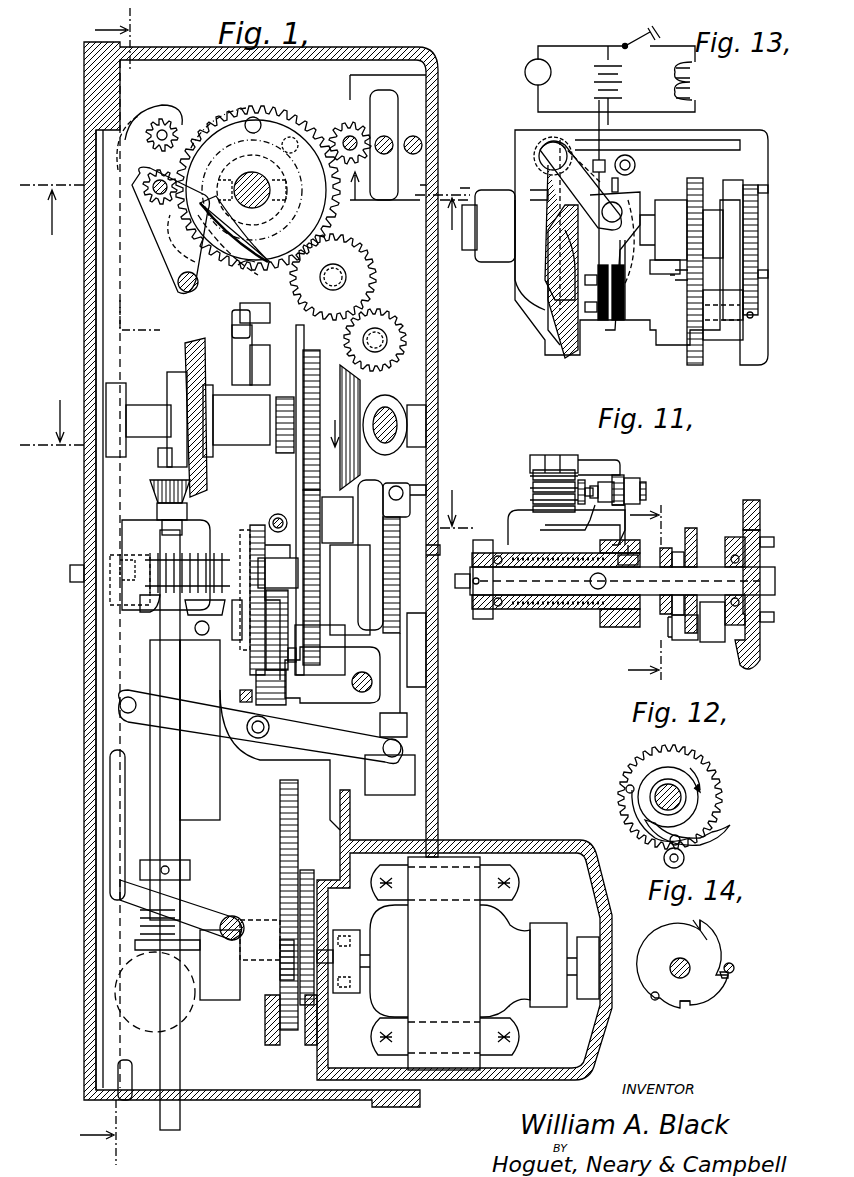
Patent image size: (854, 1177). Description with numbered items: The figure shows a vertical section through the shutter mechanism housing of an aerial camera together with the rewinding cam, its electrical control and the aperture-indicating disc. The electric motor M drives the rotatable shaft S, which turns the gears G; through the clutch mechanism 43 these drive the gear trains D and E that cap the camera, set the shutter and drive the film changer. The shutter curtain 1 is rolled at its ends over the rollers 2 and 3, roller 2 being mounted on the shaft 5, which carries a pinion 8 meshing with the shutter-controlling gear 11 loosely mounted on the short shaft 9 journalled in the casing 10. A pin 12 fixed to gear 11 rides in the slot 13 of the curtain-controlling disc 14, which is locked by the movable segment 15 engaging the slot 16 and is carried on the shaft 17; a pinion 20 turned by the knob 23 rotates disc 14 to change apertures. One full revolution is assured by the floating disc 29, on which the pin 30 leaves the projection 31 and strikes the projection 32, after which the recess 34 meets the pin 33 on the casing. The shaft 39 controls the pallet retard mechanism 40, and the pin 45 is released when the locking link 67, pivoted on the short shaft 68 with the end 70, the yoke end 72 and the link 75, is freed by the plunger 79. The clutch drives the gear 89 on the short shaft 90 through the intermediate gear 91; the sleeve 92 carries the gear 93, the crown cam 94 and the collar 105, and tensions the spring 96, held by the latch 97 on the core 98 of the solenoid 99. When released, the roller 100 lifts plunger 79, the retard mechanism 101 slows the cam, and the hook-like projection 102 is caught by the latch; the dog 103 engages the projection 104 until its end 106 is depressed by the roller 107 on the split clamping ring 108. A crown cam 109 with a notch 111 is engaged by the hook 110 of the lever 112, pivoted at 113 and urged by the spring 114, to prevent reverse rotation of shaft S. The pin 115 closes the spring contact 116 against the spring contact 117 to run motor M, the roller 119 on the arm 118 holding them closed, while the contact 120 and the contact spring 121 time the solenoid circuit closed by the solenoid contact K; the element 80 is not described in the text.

In FIG. 1, the shutter curtain 1 is at (118, 300).
In FIG. 1, the roller 2 is at (97, 586).
In FIG. 1, the roller 3 is at (155, 1008).
In FIG. 1, the shaft 5 is at (208, 100).
In FIG. 1, the pinion 8 is at (163, 118).
In FIG. 1, the short shaft 9 is at (258, 165).
In FIG. 11, the casing 10 is at (518, 512).
In FIG. 1, the shutter-controlling gear 11 is at (220, 105).
In FIG. 1, the pin 12 is at (238, 98).
In FIG. 11, the pin 12 is at (646, 587).
In FIG. 1, the slot 13 is at (236, 163).
In FIG. 1, the curtain-controlling disc 14 is at (258, 122).
In FIG. 1, the movable segment 15 is at (245, 268).
In FIG. 1, the slot 16 is at (268, 312).
In FIG. 1, the shaft 17 is at (182, 292).
In FIG. 1, the pinion 20 is at (175, 205).
In FIG. 1, the knob 23 is at (94, 255).
In FIG. 14, the floating disc 29 is at (660, 942).
In FIG. 14, the pin 30 is at (728, 978).
In FIG. 14, the projection 31 is at (736, 968).
In FIG. 14, the projection 32 is at (698, 926).
In FIG. 14, the pin 33 is at (652, 1000).
In FIG. 14, the recess 34 is at (680, 1008).
In FIG. 1, the shaft 39 is at (372, 100).
In FIG. 1, the pallet retard mechanism 40 is at (382, 175).
In FIG. 1, the clutch mechanism 43 is at (272, 430).
In FIG. 1, the pin 45 is at (350, 90).
In FIG. 1, the link 67 is at (298, 393).
In FIG. 1, the short shaft 68 is at (232, 366).
In FIG. 1, the end 70 is at (295, 368).
In FIG. 1, the end 72 is at (252, 275).
In FIG. 1, the link 75 is at (302, 460).
In FIG. 1, the plunger 79 is at (470, 562).
In FIG. 11, the plunger 79 is at (462, 567).
In FIG. 1, the collar 80 is at (278, 531).
In FIG. 1, the gear 89 is at (296, 635).
In FIG. 13, the gear 89 is at (708, 175).
In FIG. 11, the gear 89 is at (690, 528).
In FIG. 12, the gear 89 is at (700, 758).
In FIG. 11, the short shaft 90 is at (712, 534).
In FIG. 1, the intermediate gear 91 is at (302, 485).
In FIG. 1, the sleeve 92 is at (262, 520).
In FIG. 13, the sleeve 92 is at (665, 267).
In FIG. 11, the sleeve 92 is at (668, 552).
In FIG. 1, the gear 93 is at (251, 575).
In FIG. 11, the gear 93 is at (635, 545).
In FIG. 1, the crown cam 94 is at (222, 525).
In FIG. 11, the crown cam 94 is at (615, 628).
In FIG. 1, the spring 96 is at (178, 590).
In FIG. 11, the spring 96 is at (535, 602).
In FIG. 1, the latch 97 is at (200, 608).
In FIG. 1, the core 98 is at (150, 618).
In FIG. 1, the solenoid 99 is at (205, 790).
In FIG. 13, the solenoid 99 is at (694, 85).
In FIG. 1, the roller 100 is at (222, 555).
In FIG. 11, the roller 100 is at (575, 605).
In FIG. 1, the retard mechanism 101 is at (310, 650).
In FIG. 1, the hook-like projection 102 is at (236, 630).
In FIG. 12, the dog 103 is at (680, 845).
In FIG. 12, the projection 104 is at (645, 820).
In FIG. 1, the collar 105 is at (278, 612).
In FIG. 13, the collar 105 is at (672, 200).
In FIG. 11, the collar 105 is at (678, 548).
In FIG. 12, the collar 105 is at (655, 782).
In FIG. 1, the end 106 is at (300, 640).
In FIG. 12, the end 106 is at (735, 818).
In FIG. 1, the roller 107 is at (298, 650).
In FIG. 11, the roller 107 is at (672, 627).
In FIG. 12, the roller 107 is at (664, 858).
In FIG. 1, the split clamping ring 108 is at (332, 675).
In FIG. 11, the split clamping ring 108 is at (745, 645).
In FIG. 1, the crown cam 109 is at (131, 415).
In FIG. 13, the crown cam 109 is at (552, 330).
In FIG. 1, the hook 110 is at (160, 460).
In FIG. 13, the hook 110 is at (525, 280).
In FIG. 11, the hook 110 is at (547, 455).
In FIG. 1, the notch 111 is at (168, 420).
In FIG. 13, the notch 111 is at (548, 300).
In FIG. 11, the notch 111 is at (537, 456).
In FIG. 13, the lever 112 is at (540, 170).
In FIG. 11, the lever 112 is at (563, 455).
In FIG. 13, the pivot 113 is at (545, 148).
In FIG. 13, the spring 114 is at (528, 192).
In FIG. 11, the spring 114 is at (528, 478).
In FIG. 13, the pin 115 is at (628, 155).
In FIG. 11, the pin 115 is at (640, 478).
In FIG. 13, the spring contact 116 is at (596, 158).
In FIG. 11, the spring contact 116 is at (555, 528).
In FIG. 13, the spring contact 117 is at (560, 142).
In FIG. 13, the arm 118 is at (628, 285).
In FIG. 11, the arm 118 is at (602, 448).
In FIG. 13, the roller 119 is at (635, 250).
In FIG. 11, the roller 119 is at (616, 478).
In FIG. 13, the contact 120 is at (640, 192).
In FIG. 13, the contact spring 121 is at (618, 180).
In FIG. 1, the gear train D is at (362, 300).
In FIG. 1, the gear train E is at (340, 510).
In FIG. 1, the gears G is at (198, 495).
In FIG. 13, the solenoid contact K is at (616, 63).
In FIG. 1, the electric motor M is at (464, 935).
In FIG. 1, the rotatable shaft S is at (170, 820).